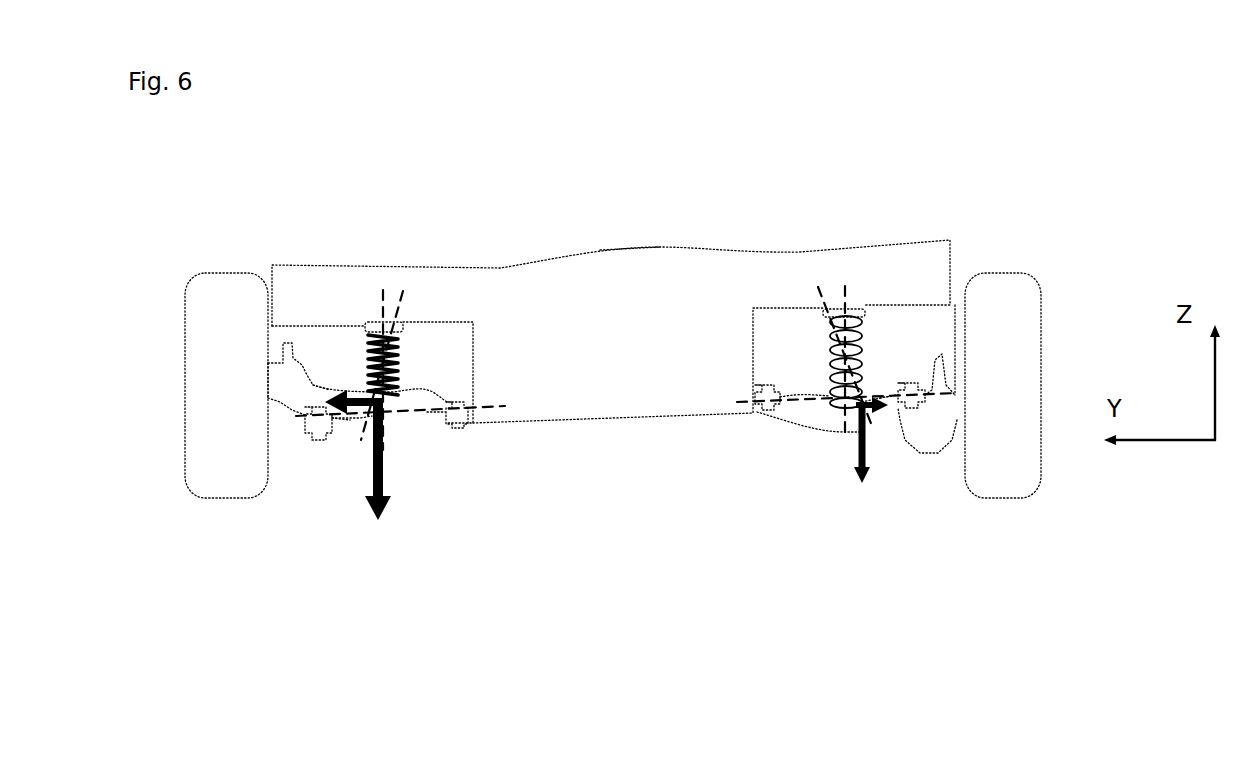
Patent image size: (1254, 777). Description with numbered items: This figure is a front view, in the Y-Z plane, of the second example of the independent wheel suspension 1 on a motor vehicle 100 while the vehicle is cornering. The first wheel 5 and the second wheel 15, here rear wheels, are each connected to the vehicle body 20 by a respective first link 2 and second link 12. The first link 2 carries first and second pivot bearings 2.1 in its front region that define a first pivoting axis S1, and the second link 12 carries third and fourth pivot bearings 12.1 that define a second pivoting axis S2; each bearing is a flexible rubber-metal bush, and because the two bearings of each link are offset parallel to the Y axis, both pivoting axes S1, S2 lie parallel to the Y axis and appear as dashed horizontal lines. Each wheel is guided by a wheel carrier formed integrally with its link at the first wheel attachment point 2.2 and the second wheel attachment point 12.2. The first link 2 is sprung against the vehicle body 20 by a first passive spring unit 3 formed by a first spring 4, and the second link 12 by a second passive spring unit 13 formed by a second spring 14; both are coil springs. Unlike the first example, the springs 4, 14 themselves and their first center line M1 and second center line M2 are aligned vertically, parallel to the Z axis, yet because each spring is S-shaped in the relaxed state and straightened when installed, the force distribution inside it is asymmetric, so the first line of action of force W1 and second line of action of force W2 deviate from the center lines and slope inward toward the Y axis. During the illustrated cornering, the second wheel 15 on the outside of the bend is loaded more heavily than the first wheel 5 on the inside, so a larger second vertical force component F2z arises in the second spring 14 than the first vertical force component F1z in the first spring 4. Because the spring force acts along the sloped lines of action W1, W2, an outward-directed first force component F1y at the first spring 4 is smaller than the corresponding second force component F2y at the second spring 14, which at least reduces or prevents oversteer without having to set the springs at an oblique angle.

The motor vehicle 100 is at (612, 198).
The independent wheel suspension 1 is at (235, 226).
The vehicle body 20 is at (624, 344).
The second wheel 15 is at (243, 403).
The first wheel 5 is at (1004, 394).
The second spring 14 is at (375, 352).
The first spring 4 is at (838, 312).
The second link 12 is at (417, 400).
The first link 2 is at (805, 400).
The third and fourth pivot bearings 12.1 is at (300, 393).
The first and second pivot bearings 2.1 is at (924, 350).
The second wheel attachment point 12.2 is at (279, 421).
The first wheel attachment point 2.2 is at (960, 445).
The second passive spring unit 13 is at (321, 345).
The first passive spring unit 3 is at (898, 333).
The second line of action of force W2 is at (393, 300).
The first line of action of force W1 is at (828, 308).
The second center line M2 is at (382, 318).
The first center line M1 is at (846, 291).
The second pivoting axis S2 is at (805, 405).
The first pivoting axis S1 is at (432, 414).
The second force component F2y is at (345, 386).
The second vertical force component F2z is at (359, 459).
The first force component F1y is at (886, 419).
The first vertical force component F1z is at (839, 442).